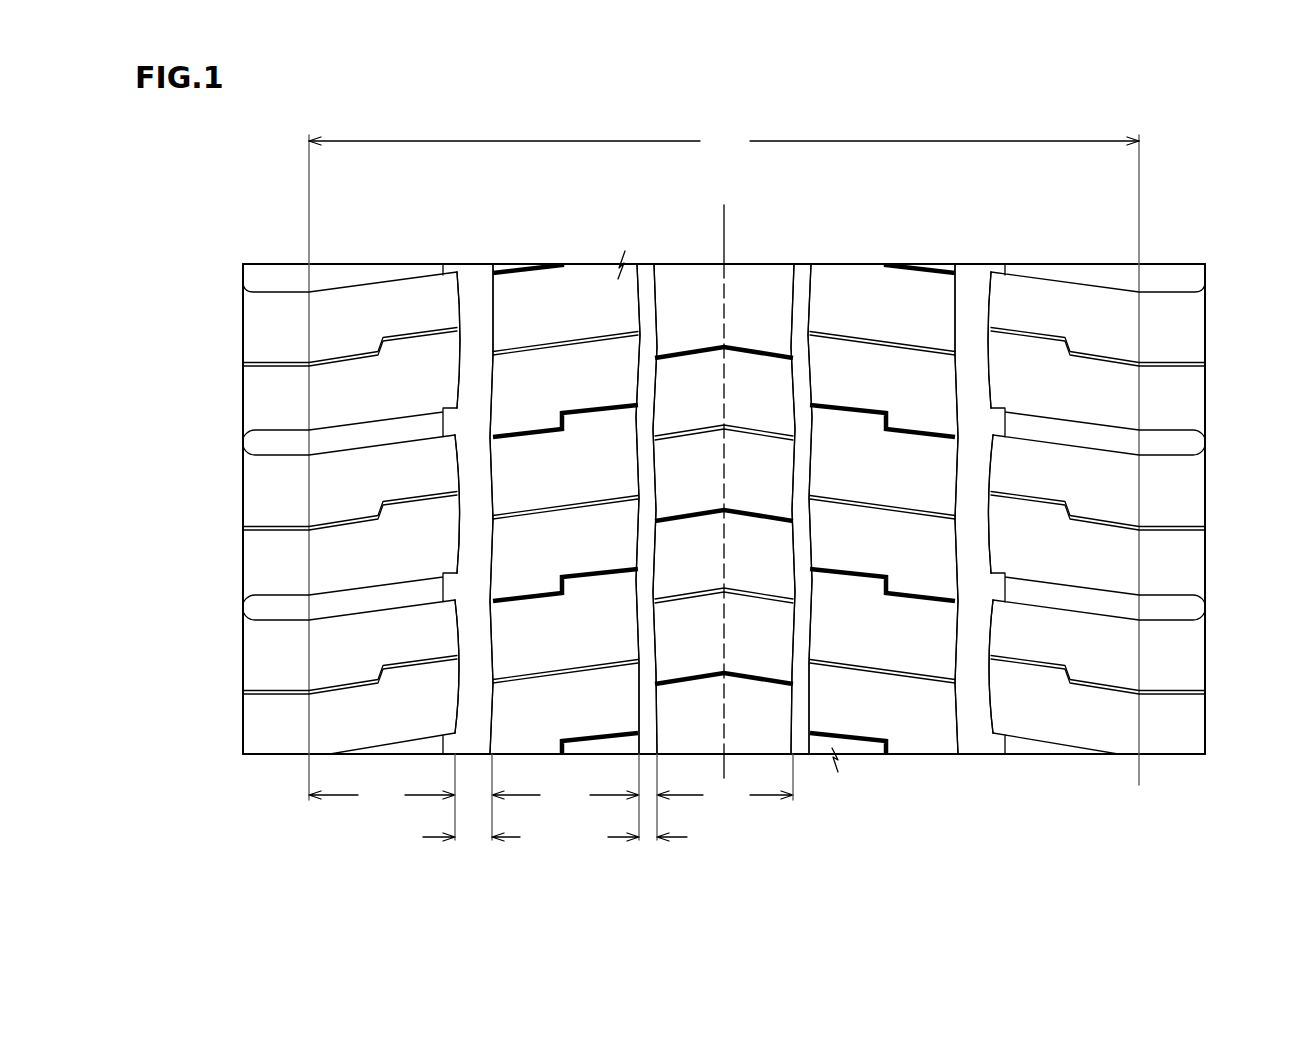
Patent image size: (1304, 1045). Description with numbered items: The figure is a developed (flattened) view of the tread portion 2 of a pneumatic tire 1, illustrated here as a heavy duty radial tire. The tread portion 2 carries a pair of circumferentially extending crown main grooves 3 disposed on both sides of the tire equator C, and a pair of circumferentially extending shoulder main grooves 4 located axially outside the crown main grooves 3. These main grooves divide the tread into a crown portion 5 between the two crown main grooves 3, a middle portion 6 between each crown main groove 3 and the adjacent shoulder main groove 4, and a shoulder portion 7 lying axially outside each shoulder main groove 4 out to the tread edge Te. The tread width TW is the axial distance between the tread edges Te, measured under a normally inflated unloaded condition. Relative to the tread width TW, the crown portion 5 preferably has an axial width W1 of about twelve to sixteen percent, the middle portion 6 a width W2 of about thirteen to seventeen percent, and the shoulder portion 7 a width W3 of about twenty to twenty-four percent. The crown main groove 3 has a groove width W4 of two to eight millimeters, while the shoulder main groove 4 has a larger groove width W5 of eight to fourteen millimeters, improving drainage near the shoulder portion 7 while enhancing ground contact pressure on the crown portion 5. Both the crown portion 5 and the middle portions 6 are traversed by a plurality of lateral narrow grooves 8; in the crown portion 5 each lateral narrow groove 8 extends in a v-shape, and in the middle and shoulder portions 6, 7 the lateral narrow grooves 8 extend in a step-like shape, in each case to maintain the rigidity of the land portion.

The pneumatic tire 1 is at (1183, 229).
The tread portion 2 is at (935, 228).
The crown main groove 3 is at (647, 296).
The shoulder main groove 4 is at (476, 292).
The crown portion 5 is at (699, 296).
The middle portion 6 is at (549, 296).
The shoulder portion 7 is at (334, 330).
The lateral narrow groove 8 is at (587, 342).
The tread edge Te is at (309, 186).
The tire equator C is at (724, 478).
The tread width TW is at (724, 142).
The width of crown portion W1 is at (725, 797).
The width of middle portion W2 is at (565, 797).
The width of shoulder portion W3 is at (382, 797).
The groove width of crown main groove W4 is at (648, 838).
The groove width of shoulder main groove W5 is at (472, 838).